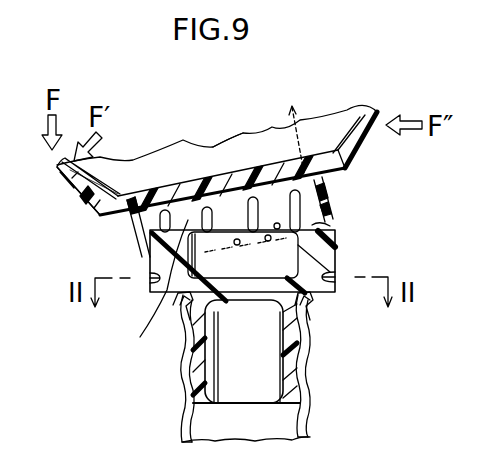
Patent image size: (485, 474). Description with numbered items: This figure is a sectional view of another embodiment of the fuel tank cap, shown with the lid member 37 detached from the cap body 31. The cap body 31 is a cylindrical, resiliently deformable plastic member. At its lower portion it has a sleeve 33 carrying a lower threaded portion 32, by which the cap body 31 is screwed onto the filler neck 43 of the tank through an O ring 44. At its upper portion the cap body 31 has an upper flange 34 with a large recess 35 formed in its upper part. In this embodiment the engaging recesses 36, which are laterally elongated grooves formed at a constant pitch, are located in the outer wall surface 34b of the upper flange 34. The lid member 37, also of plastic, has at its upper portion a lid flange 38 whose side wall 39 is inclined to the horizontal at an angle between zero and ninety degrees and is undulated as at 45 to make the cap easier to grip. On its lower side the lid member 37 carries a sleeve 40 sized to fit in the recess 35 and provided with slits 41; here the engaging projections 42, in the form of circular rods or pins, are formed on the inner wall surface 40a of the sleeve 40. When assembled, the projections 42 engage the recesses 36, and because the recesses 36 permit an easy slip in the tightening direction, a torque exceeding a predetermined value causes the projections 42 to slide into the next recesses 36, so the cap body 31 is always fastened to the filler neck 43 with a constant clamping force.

The cap body 31 is at (327, 293).
The lower threaded portion 32 is at (190, 362).
The sleeve 33 is at (300, 372).
The upper flange 34 is at (150, 258).
The outer wall surface 34b is at (338, 244).
The recess 35 is at (255, 262).
The engaging recesses 36 is at (148, 280).
The lid member 37 is at (156, 164).
The lid flange 38 is at (265, 130).
The side wall 39 is at (82, 196).
The sleeve 40 is at (227, 207).
The inner wall surface 40a is at (322, 176).
The slits 41 is at (160, 312).
The engaging projections 42 is at (326, 221).
The filler neck 43 is at (312, 405).
The O ring 44 is at (313, 322).
The undulations 45 is at (220, 148).